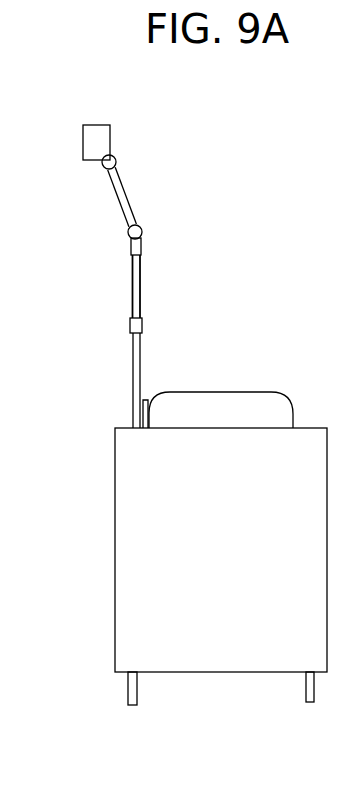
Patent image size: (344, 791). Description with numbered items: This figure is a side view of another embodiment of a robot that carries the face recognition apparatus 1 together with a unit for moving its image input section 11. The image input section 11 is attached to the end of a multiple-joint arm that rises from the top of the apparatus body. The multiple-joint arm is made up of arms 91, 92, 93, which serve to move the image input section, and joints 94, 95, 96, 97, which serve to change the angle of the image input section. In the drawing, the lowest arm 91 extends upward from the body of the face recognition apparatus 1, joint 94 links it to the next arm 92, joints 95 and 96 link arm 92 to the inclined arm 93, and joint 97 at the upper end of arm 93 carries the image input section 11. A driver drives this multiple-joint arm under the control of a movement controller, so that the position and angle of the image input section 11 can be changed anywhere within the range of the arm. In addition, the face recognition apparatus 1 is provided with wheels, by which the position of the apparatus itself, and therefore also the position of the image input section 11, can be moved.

The face recognition apparatus 1 is at (92, 416).
The image input section 11 is at (100, 130).
The arm 91 is at (138, 362).
The arm 92 is at (138, 282).
The arm 93 is at (125, 196).
The joint 94 is at (130, 327).
The joint 95 is at (143, 247).
The joint 96 is at (127, 233).
The joint 97 is at (118, 158).